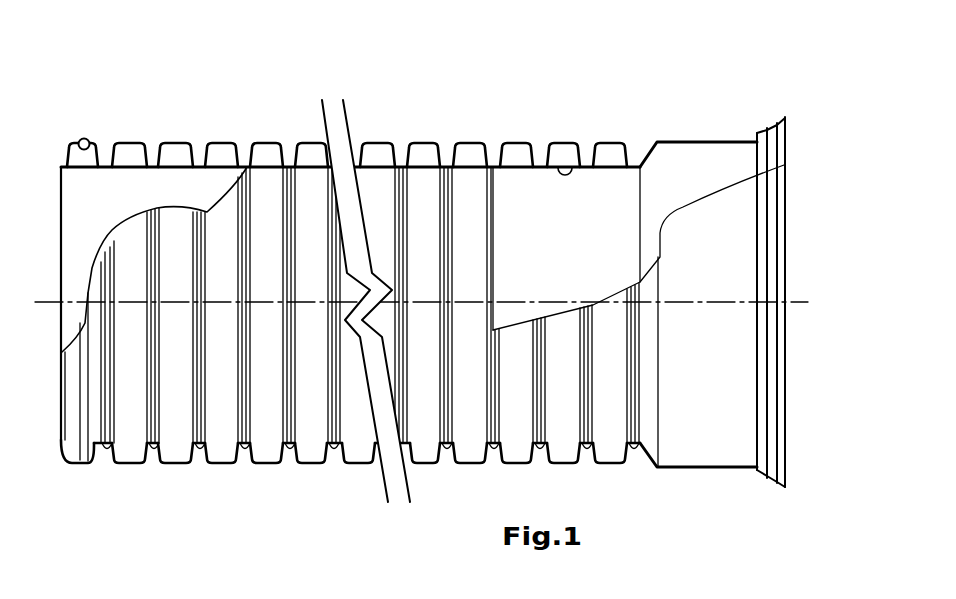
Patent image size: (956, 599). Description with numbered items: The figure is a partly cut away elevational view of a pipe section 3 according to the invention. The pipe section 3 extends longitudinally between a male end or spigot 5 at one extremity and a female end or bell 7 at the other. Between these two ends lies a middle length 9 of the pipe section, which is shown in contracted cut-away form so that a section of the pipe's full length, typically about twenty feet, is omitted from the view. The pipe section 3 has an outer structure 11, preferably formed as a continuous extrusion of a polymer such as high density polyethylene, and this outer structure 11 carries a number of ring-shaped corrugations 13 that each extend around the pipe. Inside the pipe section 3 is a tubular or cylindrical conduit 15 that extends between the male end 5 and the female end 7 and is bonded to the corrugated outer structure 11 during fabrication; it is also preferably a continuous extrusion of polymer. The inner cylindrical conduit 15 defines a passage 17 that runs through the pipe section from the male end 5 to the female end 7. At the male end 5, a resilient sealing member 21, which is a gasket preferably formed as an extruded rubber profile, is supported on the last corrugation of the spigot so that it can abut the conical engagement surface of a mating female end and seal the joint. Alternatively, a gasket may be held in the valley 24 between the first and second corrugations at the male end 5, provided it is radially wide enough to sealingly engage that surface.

The pipe section 3 is at (422, 122).
The male end 5 is at (78, 123).
The female end 7 is at (697, 118).
The middle length 9 is at (280, 125).
The outer structure 11 is at (127, 463).
The ring-shaped corrugations 13 is at (177, 463).
The cylindrical conduit 15 is at (570, 166).
The passage 17 is at (598, 247).
The resilient sealing member 21 is at (88, 139).
The valley 24 is at (108, 467).